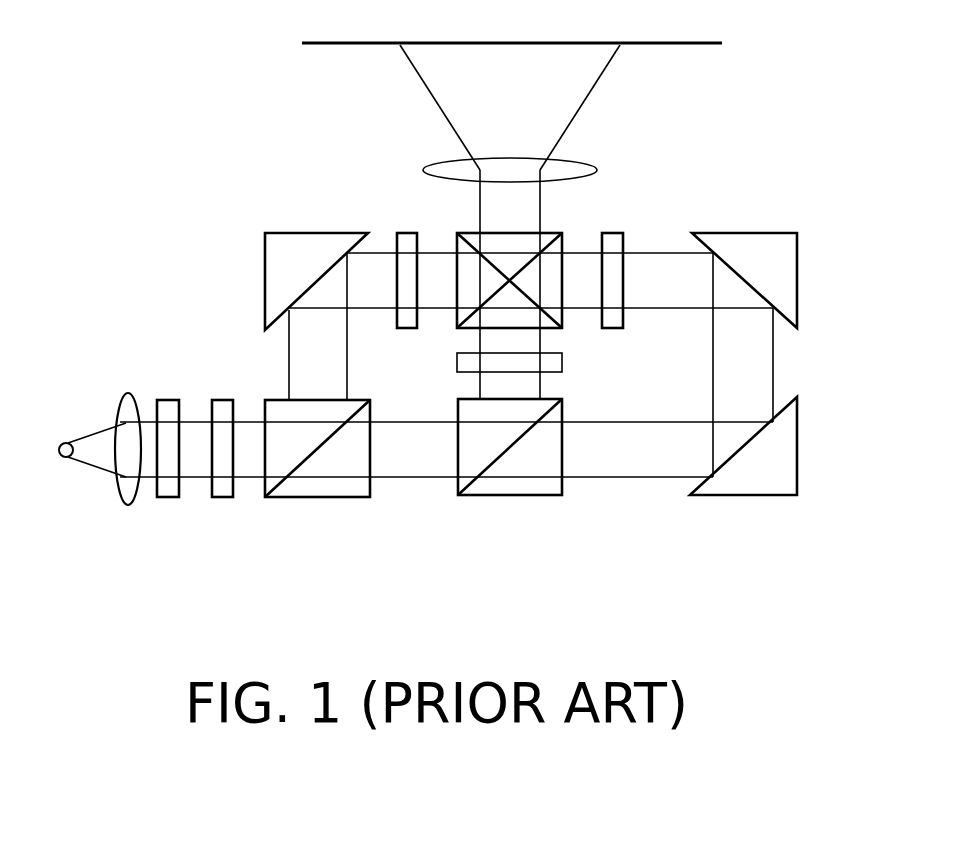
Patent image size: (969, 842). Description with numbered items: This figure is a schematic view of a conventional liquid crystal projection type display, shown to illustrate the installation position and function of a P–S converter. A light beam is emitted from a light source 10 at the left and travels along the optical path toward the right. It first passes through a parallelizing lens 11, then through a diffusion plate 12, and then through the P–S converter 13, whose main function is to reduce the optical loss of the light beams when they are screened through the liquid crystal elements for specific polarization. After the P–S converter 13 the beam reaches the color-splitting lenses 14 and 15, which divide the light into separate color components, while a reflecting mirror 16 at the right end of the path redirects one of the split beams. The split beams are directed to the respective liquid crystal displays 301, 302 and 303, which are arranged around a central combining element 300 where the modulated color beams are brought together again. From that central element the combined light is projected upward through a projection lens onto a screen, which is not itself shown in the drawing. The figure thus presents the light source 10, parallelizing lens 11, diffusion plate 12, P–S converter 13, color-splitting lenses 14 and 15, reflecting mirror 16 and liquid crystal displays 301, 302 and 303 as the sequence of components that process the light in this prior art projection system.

The light source 10 is at (86, 460).
The parallelizing lens 11 is at (127, 466).
The diffusion plate 12 is at (171, 467).
The P–S converter 13 is at (222, 467).
The color-splitting lens 14 is at (317, 465).
The color-splitting lens 15 is at (510, 465).
The reflecting mirror 16 is at (743, 464).
The X-cube color combining prism 300 is at (523, 262).
The liquid crystal display 301 is at (412, 262).
The liquid crystal display 302 is at (533, 358).
The liquid crystal display 303 is at (627, 262).